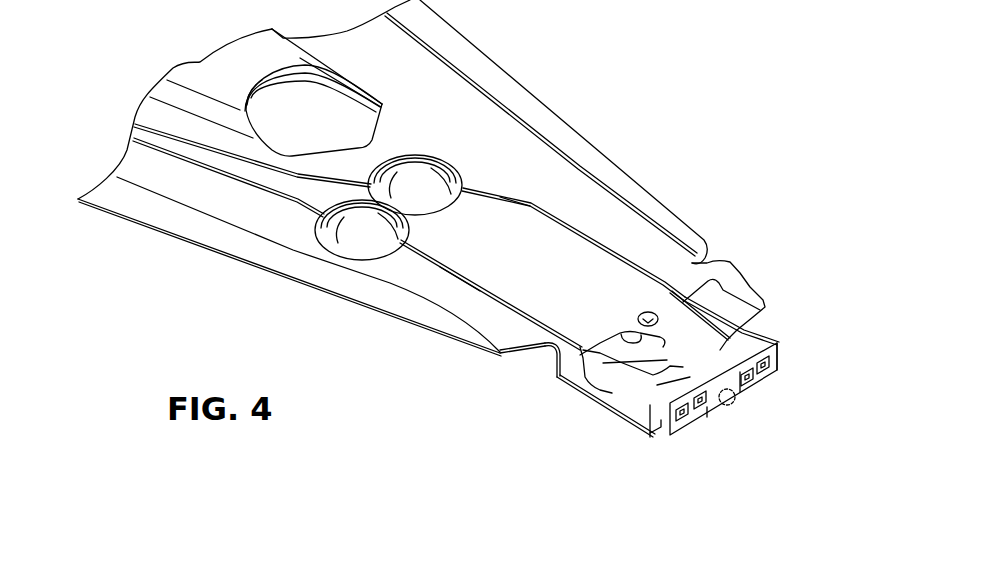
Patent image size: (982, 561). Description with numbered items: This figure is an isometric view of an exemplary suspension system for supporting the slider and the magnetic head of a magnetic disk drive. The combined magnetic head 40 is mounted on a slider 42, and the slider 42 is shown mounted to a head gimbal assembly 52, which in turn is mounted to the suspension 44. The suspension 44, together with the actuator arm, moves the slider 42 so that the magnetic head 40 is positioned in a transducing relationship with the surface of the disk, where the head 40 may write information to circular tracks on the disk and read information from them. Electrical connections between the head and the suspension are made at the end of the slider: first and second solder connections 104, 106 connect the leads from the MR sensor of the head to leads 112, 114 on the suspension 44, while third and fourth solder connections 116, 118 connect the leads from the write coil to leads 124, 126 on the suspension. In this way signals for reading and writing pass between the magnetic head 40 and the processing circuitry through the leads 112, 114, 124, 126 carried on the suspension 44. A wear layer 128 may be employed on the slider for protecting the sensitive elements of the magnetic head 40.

The magnetic head 40 is at (737, 413).
The slider 42 is at (605, 418).
The suspension 44 is at (567, 114).
The head gimbal assembly 52 is at (672, 348).
The first solder connection 104 is at (662, 432).
The second solder connection 106 is at (773, 362).
The lead 112 is at (437, 268).
The lead 114 is at (623, 254).
The third solder connection 116 is at (702, 413).
The fourth solder connection 118 is at (748, 380).
The lead 124 is at (483, 284).
The lead 126 is at (540, 218).
The wear layer 128 is at (627, 432).